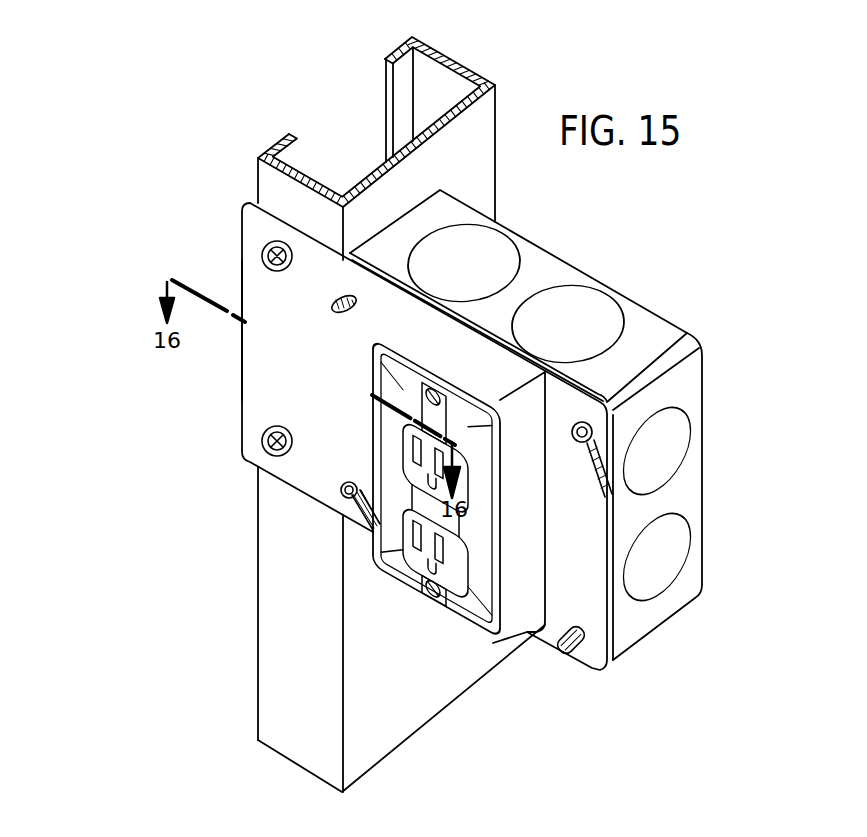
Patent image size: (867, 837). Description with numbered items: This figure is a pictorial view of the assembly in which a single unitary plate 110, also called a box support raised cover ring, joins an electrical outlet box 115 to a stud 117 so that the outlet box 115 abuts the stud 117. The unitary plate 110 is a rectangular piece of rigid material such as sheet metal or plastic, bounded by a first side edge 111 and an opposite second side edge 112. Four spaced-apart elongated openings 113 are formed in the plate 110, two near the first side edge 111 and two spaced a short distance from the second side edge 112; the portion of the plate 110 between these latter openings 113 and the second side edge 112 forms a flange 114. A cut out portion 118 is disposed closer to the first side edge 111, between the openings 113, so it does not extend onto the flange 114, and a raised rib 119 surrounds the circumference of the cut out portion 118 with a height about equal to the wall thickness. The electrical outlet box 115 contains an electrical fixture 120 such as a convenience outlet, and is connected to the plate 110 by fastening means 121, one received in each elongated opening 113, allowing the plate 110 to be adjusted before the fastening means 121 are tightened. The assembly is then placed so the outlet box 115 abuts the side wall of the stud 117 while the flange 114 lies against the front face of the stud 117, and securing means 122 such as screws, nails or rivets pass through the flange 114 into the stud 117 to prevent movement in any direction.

The unitary plate 110 is at (240, 201).
The first side edge 111 is at (617, 620).
The second side edge 112 is at (242, 387).
The openings 113 is at (331, 300).
The flange 114 is at (294, 350).
The electrical outlet box 115 is at (600, 307).
The stud 117 is at (316, 165).
The cut out portion 118 is at (480, 637).
The raised rib 119 is at (410, 583).
The electrical fixture 120 is at (402, 455).
The fastening means 121 is at (600, 433).
The securing means 122 is at (262, 264).